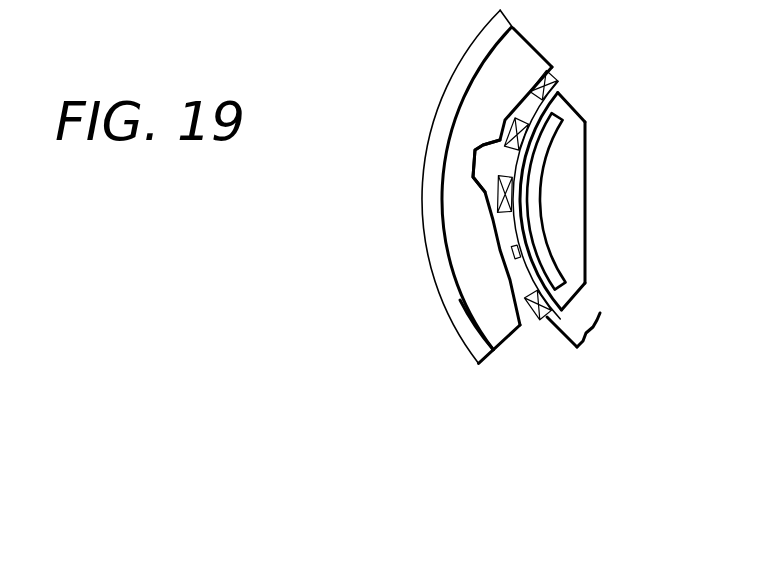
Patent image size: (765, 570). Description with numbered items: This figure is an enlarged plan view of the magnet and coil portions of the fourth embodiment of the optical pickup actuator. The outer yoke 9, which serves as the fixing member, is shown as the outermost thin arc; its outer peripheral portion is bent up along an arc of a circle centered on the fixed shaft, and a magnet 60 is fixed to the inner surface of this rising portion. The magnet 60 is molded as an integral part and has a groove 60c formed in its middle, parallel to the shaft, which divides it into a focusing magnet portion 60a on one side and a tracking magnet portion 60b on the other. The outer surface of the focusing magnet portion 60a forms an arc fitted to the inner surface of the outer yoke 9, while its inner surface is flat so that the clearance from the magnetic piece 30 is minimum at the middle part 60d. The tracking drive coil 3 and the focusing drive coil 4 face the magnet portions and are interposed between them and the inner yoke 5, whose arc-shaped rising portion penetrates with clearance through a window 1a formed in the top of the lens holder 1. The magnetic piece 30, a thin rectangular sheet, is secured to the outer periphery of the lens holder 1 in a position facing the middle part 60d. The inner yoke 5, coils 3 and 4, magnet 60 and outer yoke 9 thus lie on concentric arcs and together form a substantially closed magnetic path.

The lens holder 1 is at (586, 104).
The window 1a is at (588, 256).
The tracking drive coil 3 is at (553, 73).
The focusing drive coil 4 is at (547, 322).
The inner yoke 5 is at (543, 161).
The outer yoke 9 is at (449, 97).
The magnetic piece 30 is at (502, 259).
The magnet 60 is at (458, 208).
The focusing magnet portion 60a is at (505, 278).
The tracking magnet portion 60b is at (495, 75).
The groove 60c is at (480, 165).
The middle part 60d is at (497, 316).